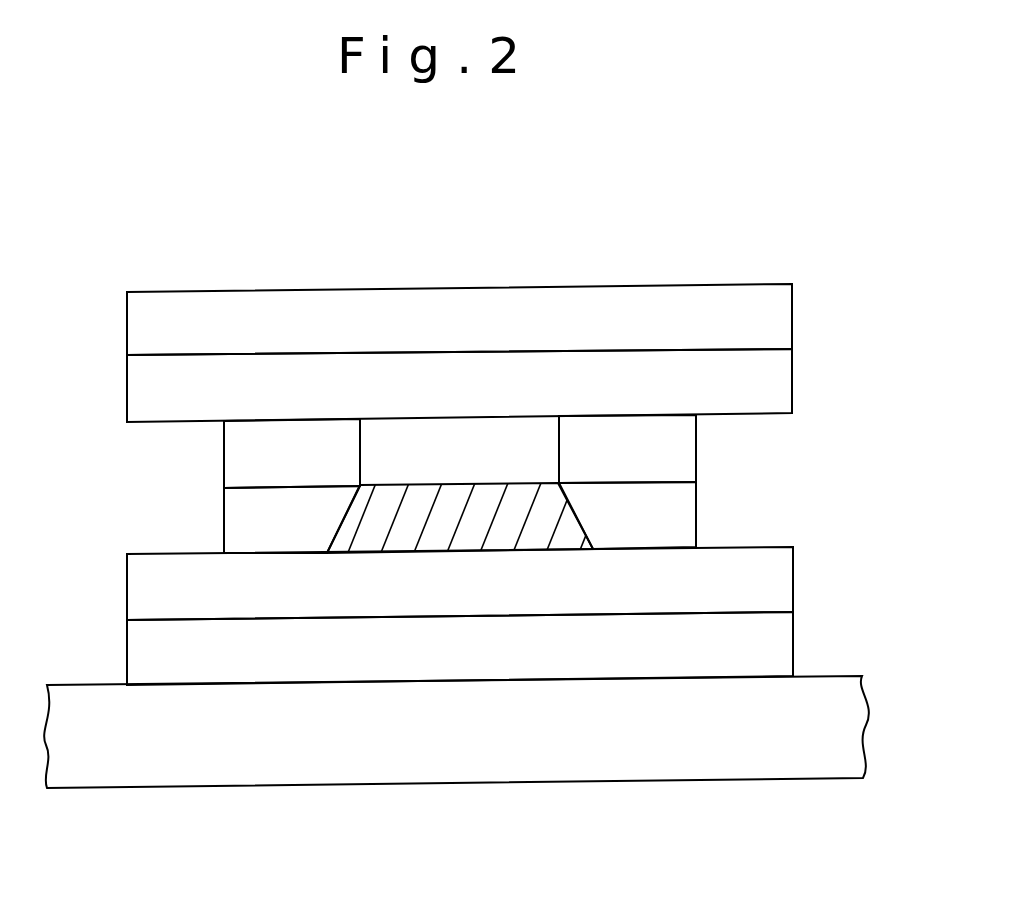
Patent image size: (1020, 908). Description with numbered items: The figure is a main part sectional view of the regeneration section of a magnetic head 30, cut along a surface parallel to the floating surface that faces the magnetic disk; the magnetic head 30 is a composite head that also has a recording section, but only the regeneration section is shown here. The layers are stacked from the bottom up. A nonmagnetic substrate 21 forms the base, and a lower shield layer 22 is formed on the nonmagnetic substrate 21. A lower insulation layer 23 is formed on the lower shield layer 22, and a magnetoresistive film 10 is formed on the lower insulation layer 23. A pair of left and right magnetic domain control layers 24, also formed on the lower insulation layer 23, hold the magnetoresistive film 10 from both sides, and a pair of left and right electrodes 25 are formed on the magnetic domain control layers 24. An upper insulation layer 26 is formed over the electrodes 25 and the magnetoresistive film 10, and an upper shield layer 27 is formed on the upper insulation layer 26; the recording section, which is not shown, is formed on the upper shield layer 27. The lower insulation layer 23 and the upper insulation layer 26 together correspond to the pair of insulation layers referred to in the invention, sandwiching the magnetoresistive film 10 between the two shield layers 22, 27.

The magnetic head 30 is at (846, 232).
The upper shield layer 27 is at (768, 334).
The upper insulation layer 26 is at (768, 383).
The electrodes 25 is at (682, 453).
The magnetic domain control layers 24 is at (683, 493).
The magnetoresistive film 10 is at (572, 542).
The lower insulation layer 23 is at (780, 579).
The lower shield layer 22 is at (780, 639).
The nonmagnetic substrate 21 is at (850, 707).